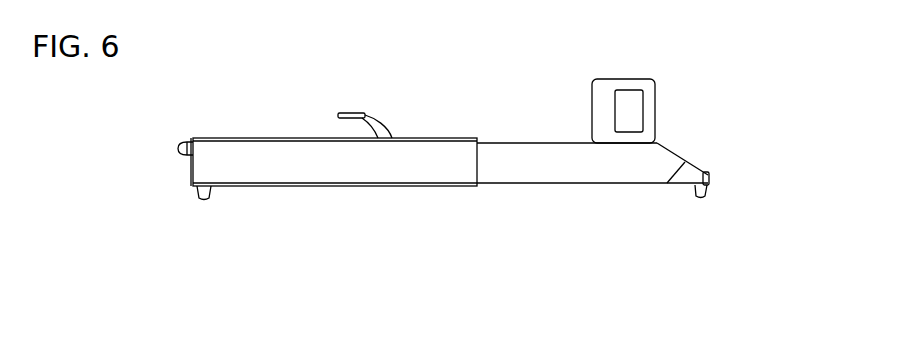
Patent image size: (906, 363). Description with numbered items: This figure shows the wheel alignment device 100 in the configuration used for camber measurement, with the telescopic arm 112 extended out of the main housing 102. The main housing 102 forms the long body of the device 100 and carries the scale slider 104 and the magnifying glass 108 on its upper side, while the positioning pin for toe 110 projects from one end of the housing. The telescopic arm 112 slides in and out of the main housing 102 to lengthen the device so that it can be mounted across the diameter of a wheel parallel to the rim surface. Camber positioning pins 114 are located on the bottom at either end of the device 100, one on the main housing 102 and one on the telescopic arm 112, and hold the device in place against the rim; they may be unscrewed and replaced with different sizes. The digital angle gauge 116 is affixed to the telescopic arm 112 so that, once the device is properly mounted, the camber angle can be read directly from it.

The wheel alignment device 100 is at (372, 330).
The main housing 102 is at (334, 162).
The scale slider 104 is at (378, 120).
The magnifying glass 108 is at (338, 113).
The positioning pin for toe 110 is at (178, 146).
The telescopic arm 112 is at (532, 165).
The camber positioning pins 114 is at (180, 200).
The digital angle gauge 116 is at (640, 102).